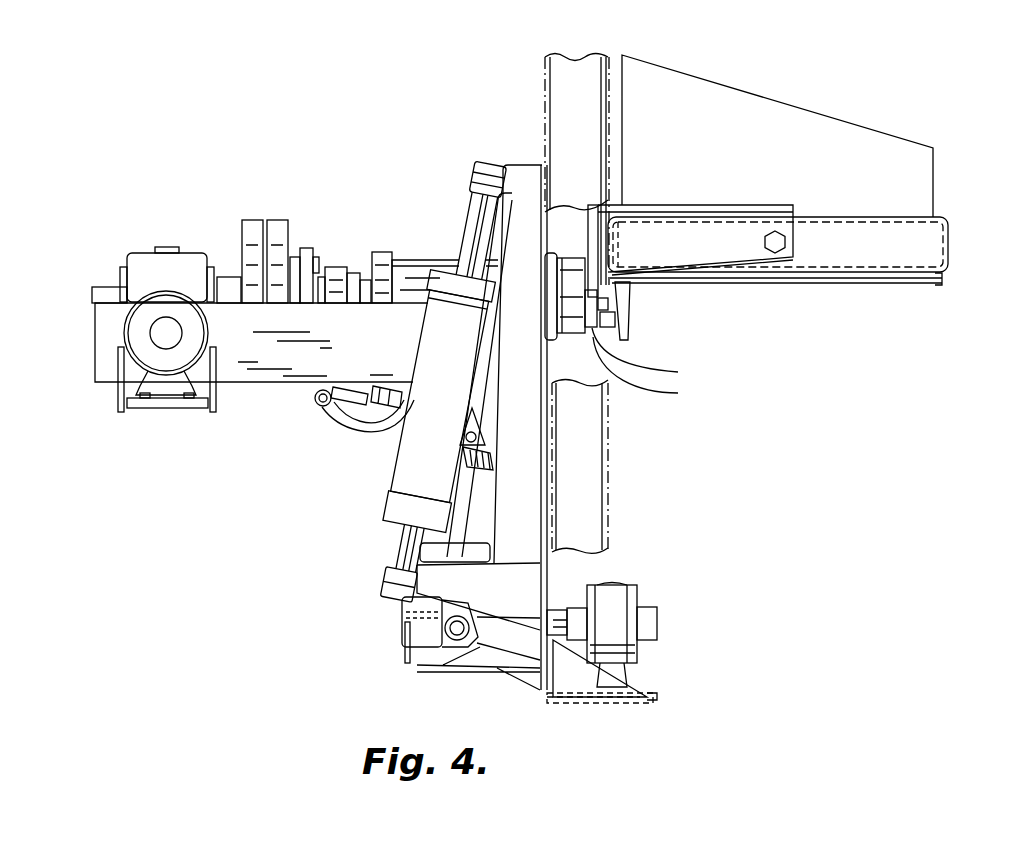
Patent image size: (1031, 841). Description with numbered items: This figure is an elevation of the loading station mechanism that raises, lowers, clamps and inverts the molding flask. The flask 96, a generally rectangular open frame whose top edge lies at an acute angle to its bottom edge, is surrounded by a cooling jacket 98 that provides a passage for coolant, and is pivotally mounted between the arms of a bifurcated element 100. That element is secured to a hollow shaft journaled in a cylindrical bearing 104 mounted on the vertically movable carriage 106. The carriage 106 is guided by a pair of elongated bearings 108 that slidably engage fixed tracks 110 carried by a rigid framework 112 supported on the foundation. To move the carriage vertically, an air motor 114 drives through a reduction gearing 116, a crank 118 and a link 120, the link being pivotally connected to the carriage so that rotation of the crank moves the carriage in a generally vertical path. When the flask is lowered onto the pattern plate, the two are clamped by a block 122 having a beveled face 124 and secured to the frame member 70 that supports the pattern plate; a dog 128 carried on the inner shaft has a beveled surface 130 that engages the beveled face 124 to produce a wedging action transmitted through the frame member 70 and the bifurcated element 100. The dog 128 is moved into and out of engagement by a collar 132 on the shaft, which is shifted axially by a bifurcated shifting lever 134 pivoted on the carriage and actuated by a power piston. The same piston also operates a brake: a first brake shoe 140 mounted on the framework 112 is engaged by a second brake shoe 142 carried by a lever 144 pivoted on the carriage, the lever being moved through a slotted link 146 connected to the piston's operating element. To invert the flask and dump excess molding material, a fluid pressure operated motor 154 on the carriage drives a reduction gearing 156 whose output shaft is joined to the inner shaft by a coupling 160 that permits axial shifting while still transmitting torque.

The frame member 70 is at (627, 290).
The flask 96 is at (923, 175).
The jacket 98 is at (950, 232).
The bifurcated element 100 is at (771, 196).
The cylindrical bearing 104 is at (413, 268).
The carriage 106 is at (275, 378).
The elongated bearings 108 is at (398, 477).
The fixed tracks 110 is at (468, 212).
The rigid framework 112 is at (553, 187).
The air motor 114 is at (612, 593).
The reduction gearing 116 is at (425, 553).
The crank 118 is at (408, 610).
The link 120 is at (453, 522).
The block 122 is at (615, 303).
The beveled face 124 is at (630, 337).
The dog 128 is at (661, 373).
The beveled surface 130 is at (661, 355).
The collar 132 is at (335, 267).
The bifurcated shifting lever 134 is at (314, 394).
The first brake shoe 140 is at (492, 470).
The second brake shoe 142 is at (488, 455).
The lever 144 is at (475, 420).
The link 146 is at (367, 420).
The fluid pressure operated motor 154 is at (137, 323).
The reduction gearing 156 is at (188, 253).
The coupling 160 is at (248, 233).